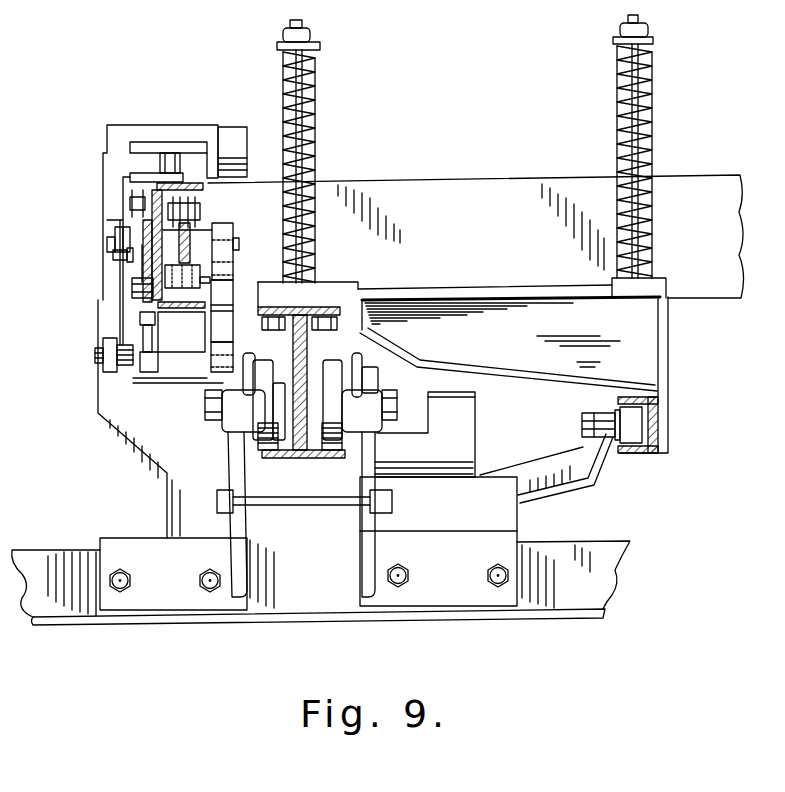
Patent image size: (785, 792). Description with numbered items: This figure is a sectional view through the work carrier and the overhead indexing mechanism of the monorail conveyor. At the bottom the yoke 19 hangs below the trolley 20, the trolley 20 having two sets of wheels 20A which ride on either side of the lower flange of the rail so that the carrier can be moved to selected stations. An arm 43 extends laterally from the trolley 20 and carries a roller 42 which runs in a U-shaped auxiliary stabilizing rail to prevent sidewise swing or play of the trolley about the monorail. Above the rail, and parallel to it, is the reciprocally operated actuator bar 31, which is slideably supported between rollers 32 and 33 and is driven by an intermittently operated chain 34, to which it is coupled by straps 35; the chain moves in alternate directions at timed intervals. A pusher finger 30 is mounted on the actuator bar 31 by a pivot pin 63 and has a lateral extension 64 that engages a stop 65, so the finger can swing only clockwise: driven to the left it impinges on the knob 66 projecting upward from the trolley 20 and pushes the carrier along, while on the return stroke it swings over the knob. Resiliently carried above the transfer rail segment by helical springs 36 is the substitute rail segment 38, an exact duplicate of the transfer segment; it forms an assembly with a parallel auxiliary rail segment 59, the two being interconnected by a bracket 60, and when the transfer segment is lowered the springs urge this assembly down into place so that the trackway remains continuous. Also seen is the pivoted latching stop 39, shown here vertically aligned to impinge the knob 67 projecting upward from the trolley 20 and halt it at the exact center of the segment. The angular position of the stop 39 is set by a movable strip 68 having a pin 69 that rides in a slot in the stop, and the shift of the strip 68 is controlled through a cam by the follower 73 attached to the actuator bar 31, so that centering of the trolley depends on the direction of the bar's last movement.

The yoke 19 is at (555, 602).
The trolley 20 is at (117, 432).
The wheels 20A is at (323, 357).
The pusher finger 30 is at (113, 290).
The actuator bar 31 is at (112, 258).
The roller 32 is at (130, 297).
The roller 33 is at (145, 182).
The chain 34 is at (173, 153).
The strap 35 is at (104, 175).
The helical spring 36 is at (314, 106).
The substitute rail segment 38 is at (295, 443).
The latching stop 39 is at (225, 222).
The roller 42 is at (637, 440).
The arm 43 is at (560, 480).
The auxiliary rail segment 59 is at (657, 417).
The bracket 60 is at (540, 370).
The pivot pin 63 is at (112, 247).
The lateral extension 64 is at (128, 253).
The stop 65 is at (122, 227).
The knob 66 is at (95, 360).
The knob 67 is at (250, 343).
The movable strip 68 is at (193, 227).
The pin 69 is at (237, 244).
The follower 73 is at (225, 132).